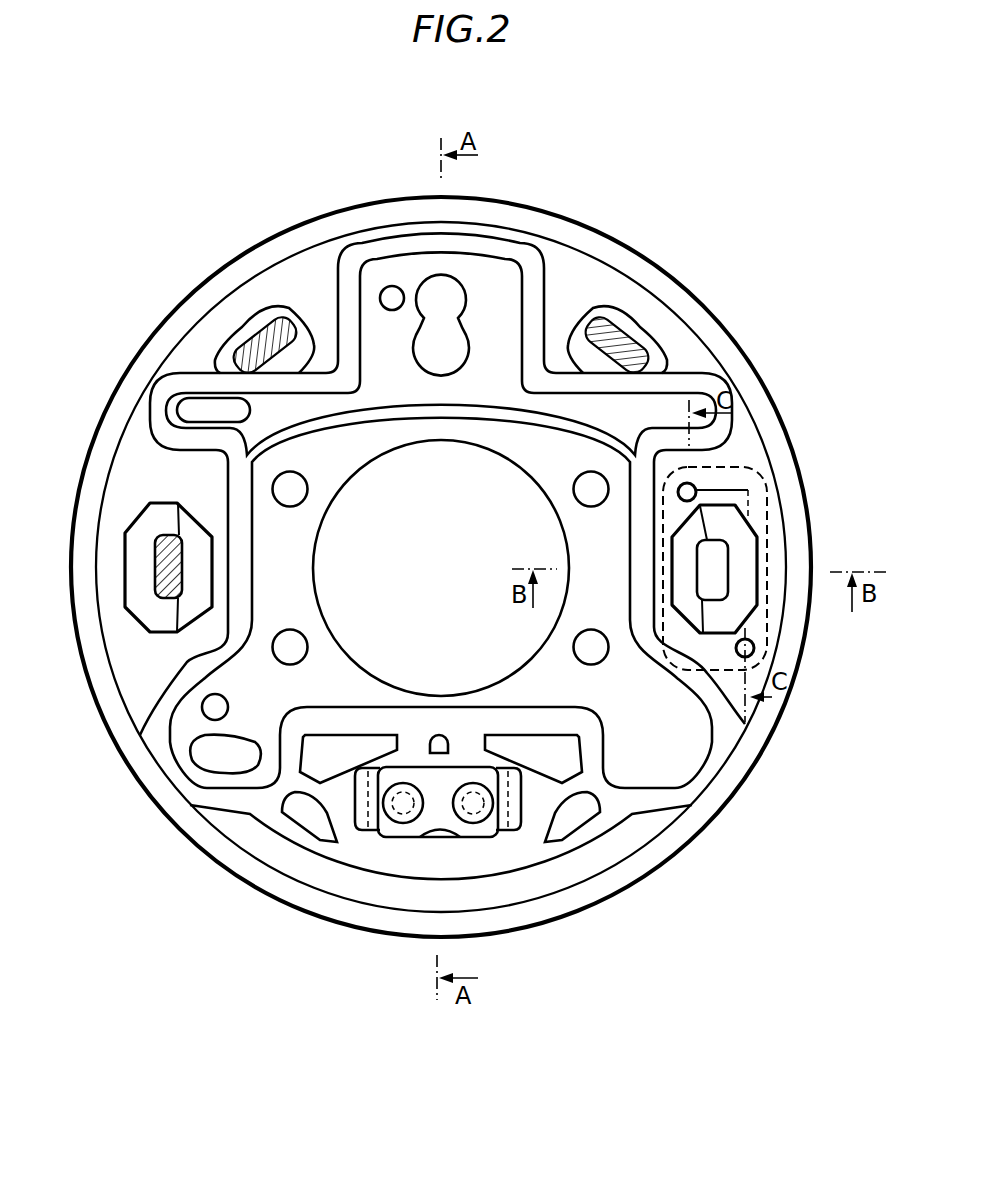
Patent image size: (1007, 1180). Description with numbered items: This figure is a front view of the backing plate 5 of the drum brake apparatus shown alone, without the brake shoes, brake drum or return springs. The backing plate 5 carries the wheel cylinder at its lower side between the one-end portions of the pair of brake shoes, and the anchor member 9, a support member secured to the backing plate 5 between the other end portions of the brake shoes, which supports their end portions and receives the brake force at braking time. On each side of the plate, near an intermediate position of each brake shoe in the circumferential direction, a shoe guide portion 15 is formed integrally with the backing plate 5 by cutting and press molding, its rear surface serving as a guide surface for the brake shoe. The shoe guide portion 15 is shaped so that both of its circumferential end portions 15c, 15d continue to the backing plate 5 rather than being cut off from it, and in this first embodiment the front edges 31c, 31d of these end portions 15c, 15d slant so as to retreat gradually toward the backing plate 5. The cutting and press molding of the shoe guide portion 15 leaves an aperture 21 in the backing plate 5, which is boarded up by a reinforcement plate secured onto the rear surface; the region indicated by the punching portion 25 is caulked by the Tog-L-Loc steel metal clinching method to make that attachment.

The backing plate 5 is at (606, 227).
The anchor member 9 is at (458, 827).
The shoe guide portion 15 is at (177, 607).
The end portion of shoe guide portion 15c is at (703, 522).
The end portion of shoe guide portion 15d is at (703, 616).
The aperture 21 is at (735, 532).
The punching portion 25 is at (690, 476).
The front edge of end portion 31c is at (697, 488).
The front edge of end portion 31d is at (755, 651).